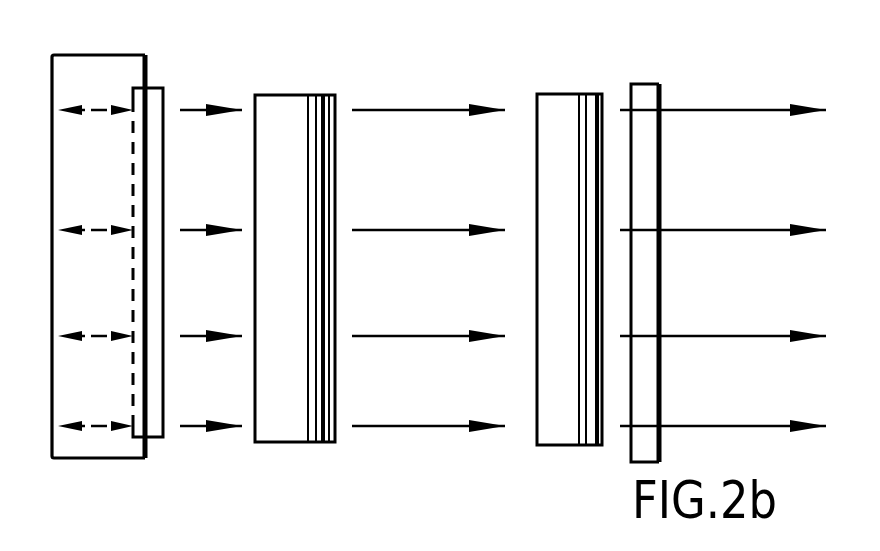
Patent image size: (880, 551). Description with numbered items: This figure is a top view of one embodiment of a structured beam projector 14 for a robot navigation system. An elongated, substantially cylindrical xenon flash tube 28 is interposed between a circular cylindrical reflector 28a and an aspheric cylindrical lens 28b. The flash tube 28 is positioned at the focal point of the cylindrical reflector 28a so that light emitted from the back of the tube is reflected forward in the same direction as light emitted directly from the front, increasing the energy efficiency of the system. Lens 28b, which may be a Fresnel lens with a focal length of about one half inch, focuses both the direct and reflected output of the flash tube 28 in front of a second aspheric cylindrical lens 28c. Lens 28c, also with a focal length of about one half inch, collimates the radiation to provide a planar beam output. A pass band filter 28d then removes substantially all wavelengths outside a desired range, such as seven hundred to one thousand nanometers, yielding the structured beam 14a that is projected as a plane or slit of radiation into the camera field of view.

The circular cylindrical reflector 28a is at (80, 55).
The xenon flash tube 28 is at (165, 90).
The aspheric cylindrical lens 28b is at (272, 95).
The second aspheric cylindrical lens 28c is at (548, 94).
The pass band filter 28d is at (645, 84).
The beam projector 14 is at (165, 455).
The structured beam 14a is at (723, 107).